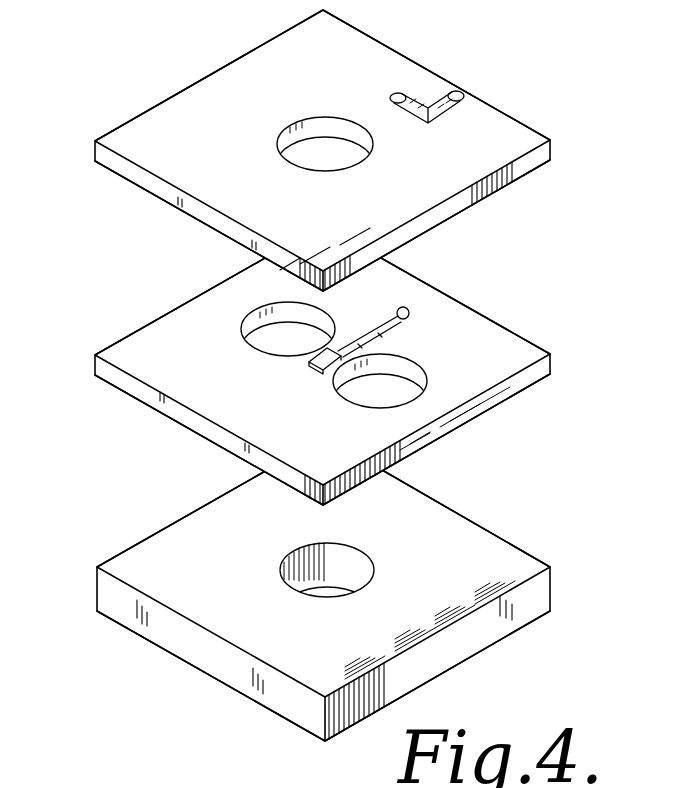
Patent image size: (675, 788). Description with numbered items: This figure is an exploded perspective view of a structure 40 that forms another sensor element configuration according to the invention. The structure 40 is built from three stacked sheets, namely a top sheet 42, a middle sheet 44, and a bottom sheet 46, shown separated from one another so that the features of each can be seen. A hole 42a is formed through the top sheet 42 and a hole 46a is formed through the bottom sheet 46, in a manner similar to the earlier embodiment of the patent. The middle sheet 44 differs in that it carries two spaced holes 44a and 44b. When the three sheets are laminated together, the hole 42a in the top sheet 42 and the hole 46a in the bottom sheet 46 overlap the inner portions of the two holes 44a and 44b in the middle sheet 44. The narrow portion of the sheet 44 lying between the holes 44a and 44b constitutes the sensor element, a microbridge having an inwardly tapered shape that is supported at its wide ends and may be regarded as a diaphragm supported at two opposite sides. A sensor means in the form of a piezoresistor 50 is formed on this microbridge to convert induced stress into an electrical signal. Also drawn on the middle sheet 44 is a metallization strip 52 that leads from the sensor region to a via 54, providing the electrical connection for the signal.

The structure 40 is at (130, 85).
The sheet 42 is at (220, 88).
The hole 42a is at (333, 123).
The sheet 44 is at (162, 374).
The hole 44a is at (250, 317).
The hole 44b is at (425, 383).
The sheet 46 is at (242, 638).
The hole 46a is at (347, 557).
The piezoresistor 50 is at (309, 362).
The metallization strip 52 is at (393, 330).
The via 54 is at (406, 307).